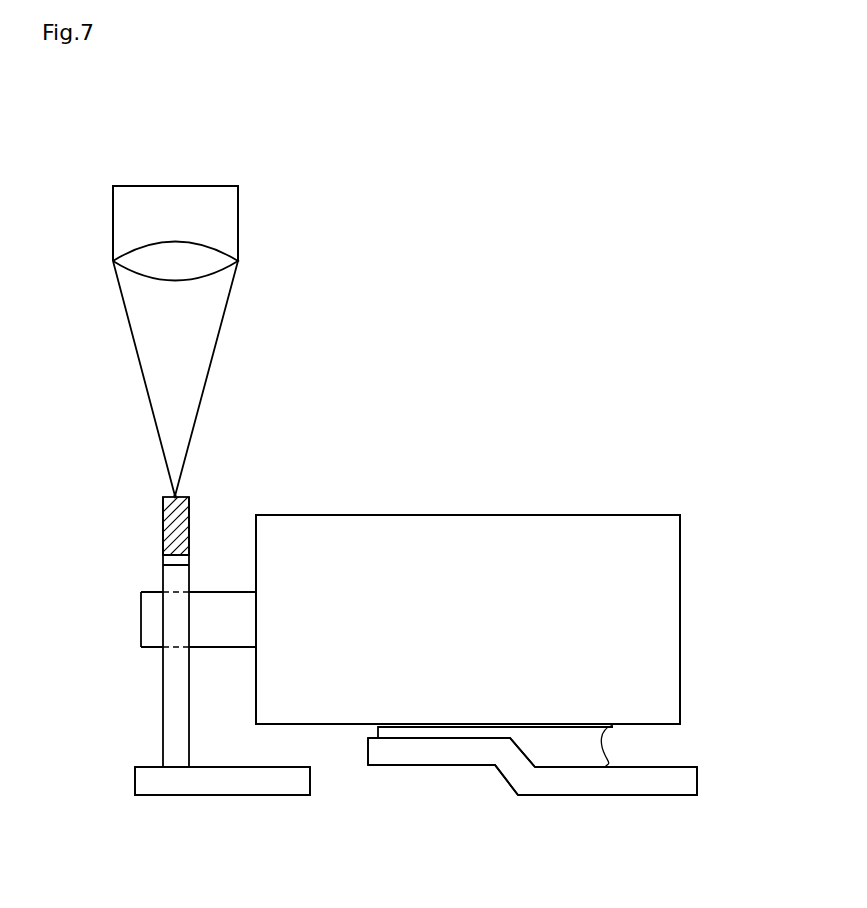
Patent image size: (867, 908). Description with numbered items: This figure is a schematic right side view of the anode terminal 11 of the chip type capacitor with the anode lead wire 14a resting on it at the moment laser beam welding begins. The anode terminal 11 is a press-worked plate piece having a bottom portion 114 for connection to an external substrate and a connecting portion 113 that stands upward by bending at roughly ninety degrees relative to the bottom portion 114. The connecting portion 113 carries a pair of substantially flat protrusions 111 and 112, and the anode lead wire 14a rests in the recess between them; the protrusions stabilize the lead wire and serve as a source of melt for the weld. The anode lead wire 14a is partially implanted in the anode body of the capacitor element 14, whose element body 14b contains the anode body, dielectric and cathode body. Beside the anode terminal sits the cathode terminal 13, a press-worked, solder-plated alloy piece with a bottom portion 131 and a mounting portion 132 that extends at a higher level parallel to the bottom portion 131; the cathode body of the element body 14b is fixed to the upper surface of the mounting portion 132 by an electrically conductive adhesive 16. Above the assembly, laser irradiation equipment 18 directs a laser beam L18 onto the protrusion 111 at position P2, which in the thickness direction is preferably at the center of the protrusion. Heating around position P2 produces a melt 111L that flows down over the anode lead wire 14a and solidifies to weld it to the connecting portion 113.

The laser irradiation equipment 18 is at (238, 221).
The laser beam L18 is at (224, 321).
The position P2 is at (173, 494).
The melt 111L is at (163, 515).
The protrusion 111 is at (163, 563).
The protrusion 112 is at (163, 575).
The connecting portion 113 is at (163, 670).
The bottom portion 114 is at (240, 797).
The anode terminal 11 is at (140, 726).
The capacitor element 14 is at (478, 505).
The anode lead wire 14a is at (226, 592).
The element body 14b is at (355, 515).
The electrically conductive adhesive 16 is at (378, 730).
The cathode terminal 13 is at (697, 762).
The mounting portion 132 is at (450, 765).
The bottom portion 131 is at (612, 797).